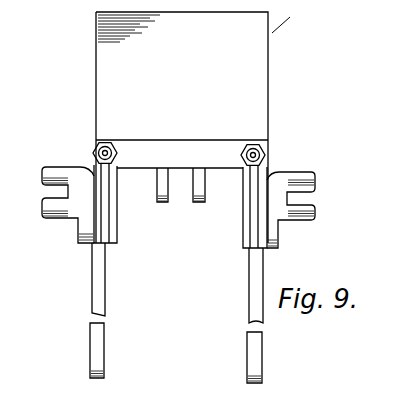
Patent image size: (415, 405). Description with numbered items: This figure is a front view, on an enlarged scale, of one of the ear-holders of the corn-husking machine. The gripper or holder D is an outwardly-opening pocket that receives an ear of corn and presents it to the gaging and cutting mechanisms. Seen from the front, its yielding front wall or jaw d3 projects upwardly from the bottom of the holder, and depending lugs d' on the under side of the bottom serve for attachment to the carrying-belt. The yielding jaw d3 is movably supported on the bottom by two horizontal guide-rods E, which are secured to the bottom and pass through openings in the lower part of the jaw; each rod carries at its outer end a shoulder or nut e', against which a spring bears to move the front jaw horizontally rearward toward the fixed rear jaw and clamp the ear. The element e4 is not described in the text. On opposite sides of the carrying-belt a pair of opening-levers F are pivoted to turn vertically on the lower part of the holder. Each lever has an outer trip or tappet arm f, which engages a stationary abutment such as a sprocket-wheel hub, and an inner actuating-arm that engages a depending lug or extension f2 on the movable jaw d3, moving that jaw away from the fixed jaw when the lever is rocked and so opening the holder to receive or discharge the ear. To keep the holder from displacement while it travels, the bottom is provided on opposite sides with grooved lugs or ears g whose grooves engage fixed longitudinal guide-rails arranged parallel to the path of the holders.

The gripper or holder D is at (198, 127).
The yielding front wall or jaw d3 is at (143, 36).
The depending lugs d' is at (181, 201).
The horizontal guide-rods E is at (98, 154).
The pivot pin e4 is at (112, 147).
The shoulder or nut e' is at (247, 136).
The opening-levers F is at (98, 268).
The trip or tappet arm f is at (88, 340).
The depending lug or extension f2 is at (245, 217).
The grooved lugs or ears g is at (49, 184).